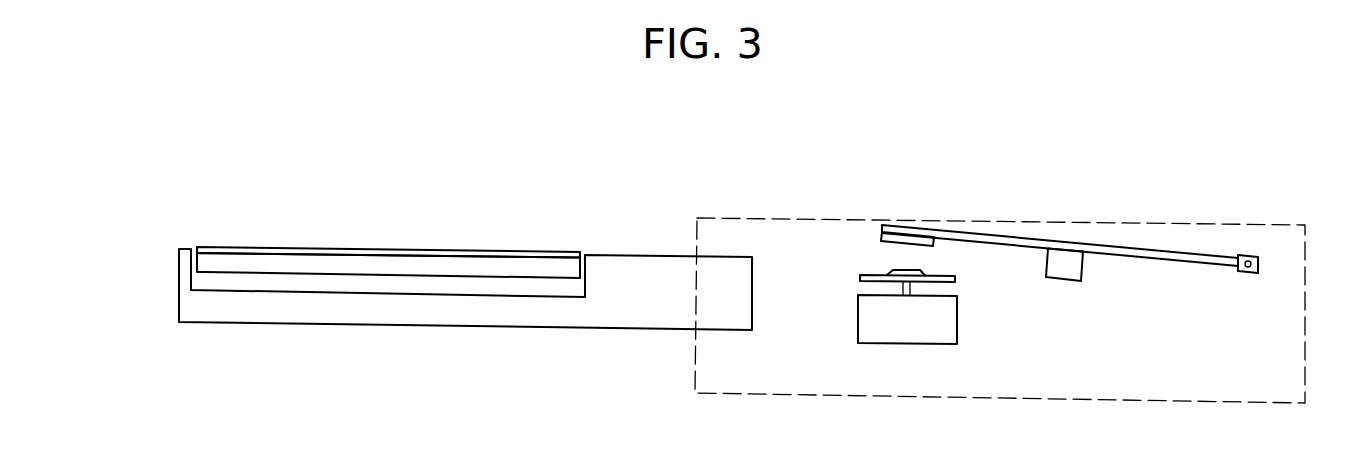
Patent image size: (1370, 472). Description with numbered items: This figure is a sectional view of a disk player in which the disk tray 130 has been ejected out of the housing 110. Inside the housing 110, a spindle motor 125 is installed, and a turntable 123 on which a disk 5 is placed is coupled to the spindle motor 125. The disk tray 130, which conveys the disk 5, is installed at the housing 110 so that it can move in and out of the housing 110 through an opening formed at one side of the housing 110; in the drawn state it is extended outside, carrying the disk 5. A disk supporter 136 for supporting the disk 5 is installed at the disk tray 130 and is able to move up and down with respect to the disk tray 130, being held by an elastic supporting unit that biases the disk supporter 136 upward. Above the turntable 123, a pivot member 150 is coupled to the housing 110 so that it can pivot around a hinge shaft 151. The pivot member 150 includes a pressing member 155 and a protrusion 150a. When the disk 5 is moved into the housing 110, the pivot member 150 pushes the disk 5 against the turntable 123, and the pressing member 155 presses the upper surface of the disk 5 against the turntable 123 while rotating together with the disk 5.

The disk 5 is at (450, 253).
The disk supporter 136 is at (552, 268).
The disk tray 130 is at (568, 315).
The housing 110 is at (1182, 225).
The pivot member 150 is at (1102, 247).
The protrusion 150a is at (1075, 258).
The hinge shaft 151 is at (1253, 258).
The pressing member 155 is at (905, 233).
The turntable 123 is at (872, 275).
The spindle motor 125 is at (910, 330).